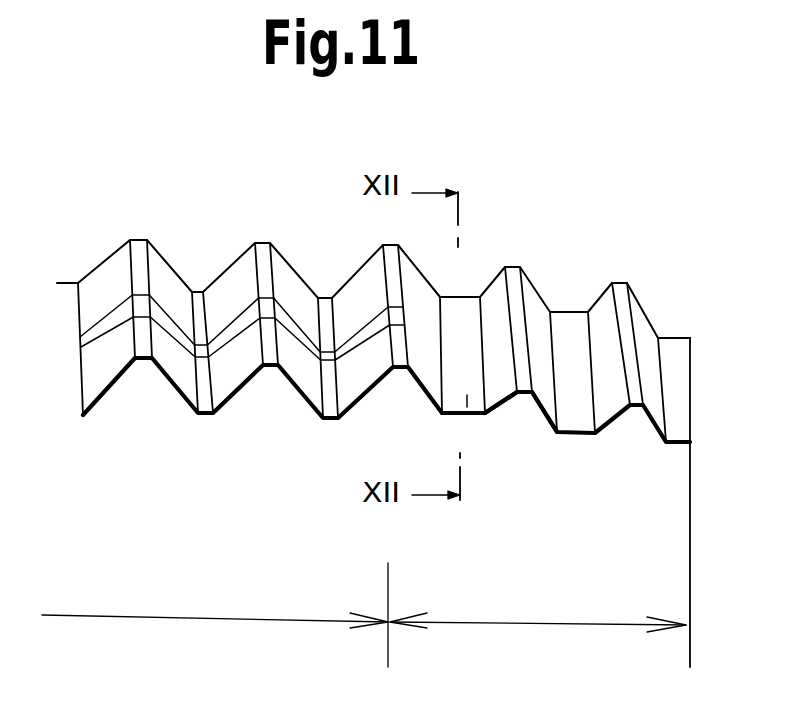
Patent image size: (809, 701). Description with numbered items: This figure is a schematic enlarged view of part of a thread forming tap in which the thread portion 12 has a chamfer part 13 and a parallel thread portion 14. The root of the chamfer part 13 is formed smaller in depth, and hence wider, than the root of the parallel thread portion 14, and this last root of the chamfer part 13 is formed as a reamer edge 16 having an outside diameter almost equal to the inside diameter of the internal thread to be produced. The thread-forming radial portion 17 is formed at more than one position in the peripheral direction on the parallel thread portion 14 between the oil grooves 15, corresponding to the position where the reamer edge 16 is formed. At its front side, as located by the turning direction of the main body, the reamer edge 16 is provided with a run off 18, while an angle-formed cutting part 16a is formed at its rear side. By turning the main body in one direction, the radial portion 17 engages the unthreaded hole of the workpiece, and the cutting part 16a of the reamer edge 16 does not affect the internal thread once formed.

The thread portion 12 is at (213, 248).
The chamfer part 13 is at (538, 613).
The parallel thread portion 14 is at (215, 615).
The oil groove 15 is at (527, 423).
The reamer edge 16 is at (460, 372).
The cutting part 16a is at (463, 292).
The thread-forming radial portion 17 is at (122, 312).
The run off 18 is at (472, 417).